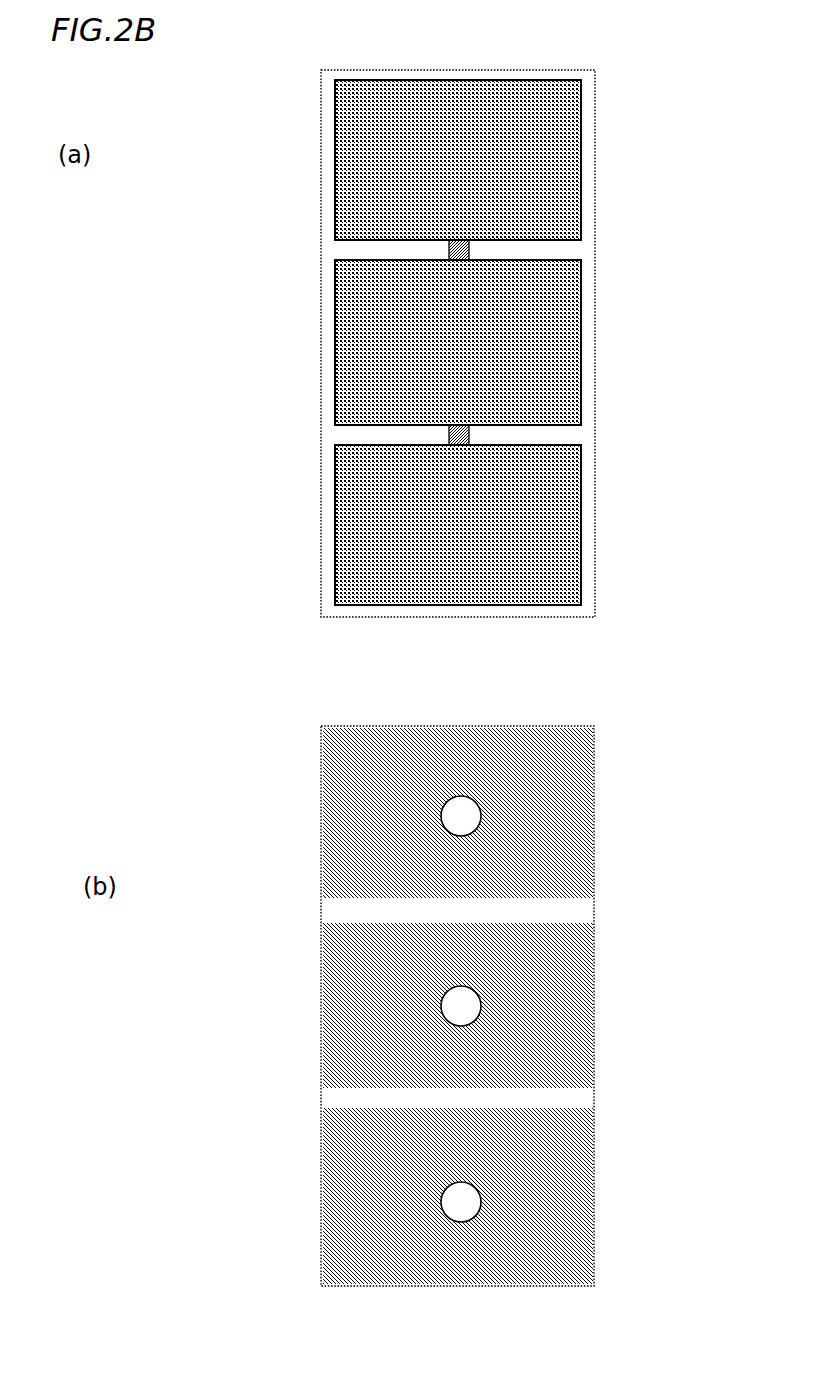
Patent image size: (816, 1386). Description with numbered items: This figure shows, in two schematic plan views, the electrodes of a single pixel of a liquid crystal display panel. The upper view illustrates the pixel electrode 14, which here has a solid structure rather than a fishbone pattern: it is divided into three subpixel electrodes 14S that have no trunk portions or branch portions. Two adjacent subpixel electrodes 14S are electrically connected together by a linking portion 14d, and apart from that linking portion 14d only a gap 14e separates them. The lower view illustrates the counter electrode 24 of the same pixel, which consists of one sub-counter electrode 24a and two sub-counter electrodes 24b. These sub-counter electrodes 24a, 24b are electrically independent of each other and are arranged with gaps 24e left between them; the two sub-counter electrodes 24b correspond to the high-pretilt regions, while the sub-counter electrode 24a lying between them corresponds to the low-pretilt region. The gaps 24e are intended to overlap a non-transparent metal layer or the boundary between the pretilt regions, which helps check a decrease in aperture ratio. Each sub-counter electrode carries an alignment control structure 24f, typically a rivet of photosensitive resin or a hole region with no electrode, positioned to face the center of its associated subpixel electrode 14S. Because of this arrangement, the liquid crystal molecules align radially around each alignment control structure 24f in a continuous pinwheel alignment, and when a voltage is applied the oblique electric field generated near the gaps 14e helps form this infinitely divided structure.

The pixel electrode 14 is at (630, 105).
The subpixel electrode 14S is at (318, 73).
The linking portion 14d is at (441, 243).
The gap 14e is at (338, 247).
The counter electrode 24 is at (608, 742).
The sub-counter electrode 24a is at (333, 993).
The sub-counter electrode 24b is at (333, 817).
The gap 24e is at (334, 905).
The alignment control structure 24f is at (448, 808).